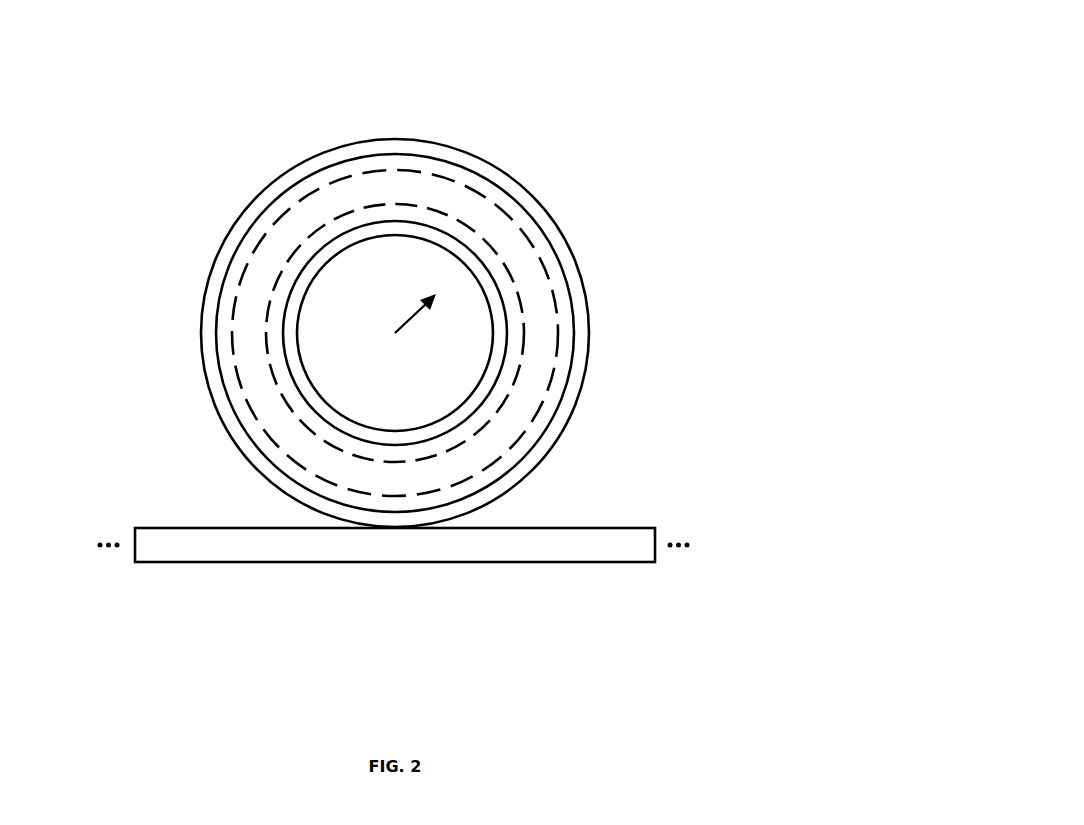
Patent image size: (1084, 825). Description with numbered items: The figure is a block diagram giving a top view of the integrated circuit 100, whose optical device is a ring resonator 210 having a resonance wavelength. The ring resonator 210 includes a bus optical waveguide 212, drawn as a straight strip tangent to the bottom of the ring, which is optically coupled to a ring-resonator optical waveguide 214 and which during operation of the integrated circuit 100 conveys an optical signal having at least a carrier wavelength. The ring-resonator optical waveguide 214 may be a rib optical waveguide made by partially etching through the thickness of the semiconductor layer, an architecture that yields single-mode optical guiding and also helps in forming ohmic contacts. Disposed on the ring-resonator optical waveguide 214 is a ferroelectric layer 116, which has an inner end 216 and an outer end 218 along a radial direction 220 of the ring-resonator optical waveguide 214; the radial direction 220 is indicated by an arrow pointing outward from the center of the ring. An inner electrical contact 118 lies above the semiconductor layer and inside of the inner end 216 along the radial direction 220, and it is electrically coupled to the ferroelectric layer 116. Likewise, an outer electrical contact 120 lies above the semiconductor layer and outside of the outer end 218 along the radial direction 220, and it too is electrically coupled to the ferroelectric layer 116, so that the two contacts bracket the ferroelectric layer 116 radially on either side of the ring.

The integrated circuit 100 is at (590, 62).
The ring resonator 210 is at (457, 411).
The ring-resonator optical waveguide 214 is at (292, 217).
The ferroelectric layer 116 is at (365, 308).
The outer end 218 is at (533, 220).
The inner end 216 is at (500, 375).
The radial direction 220 is at (544, 278).
The outer electrical contact 120 is at (353, 515).
The inner electrical contact 118 is at (445, 428).
The bus optical waveguide 212 is at (168, 543).